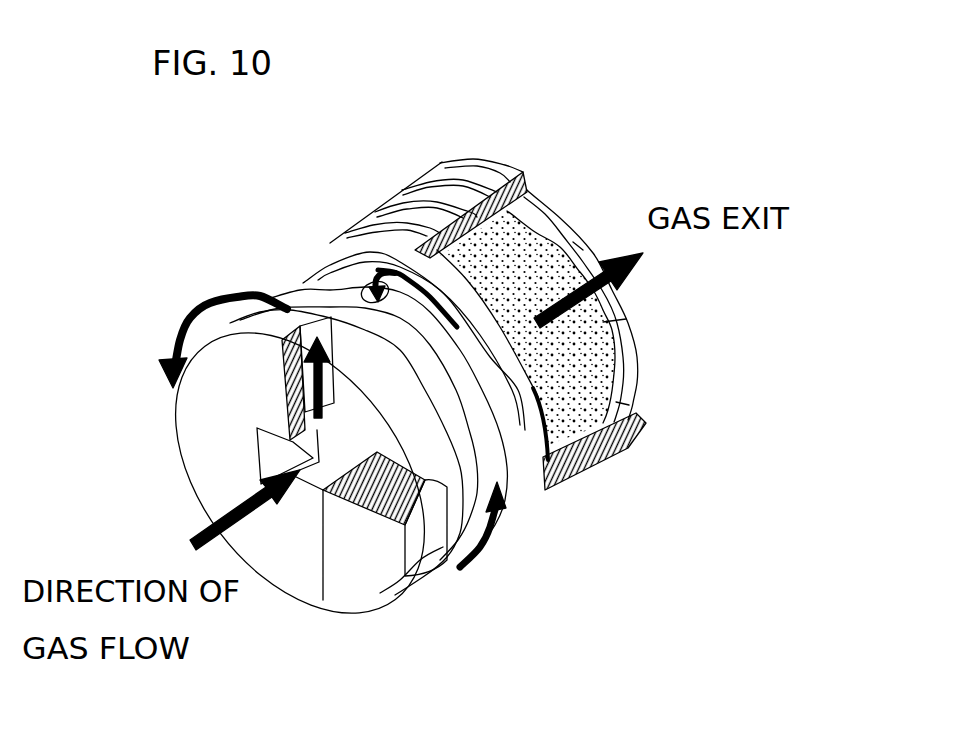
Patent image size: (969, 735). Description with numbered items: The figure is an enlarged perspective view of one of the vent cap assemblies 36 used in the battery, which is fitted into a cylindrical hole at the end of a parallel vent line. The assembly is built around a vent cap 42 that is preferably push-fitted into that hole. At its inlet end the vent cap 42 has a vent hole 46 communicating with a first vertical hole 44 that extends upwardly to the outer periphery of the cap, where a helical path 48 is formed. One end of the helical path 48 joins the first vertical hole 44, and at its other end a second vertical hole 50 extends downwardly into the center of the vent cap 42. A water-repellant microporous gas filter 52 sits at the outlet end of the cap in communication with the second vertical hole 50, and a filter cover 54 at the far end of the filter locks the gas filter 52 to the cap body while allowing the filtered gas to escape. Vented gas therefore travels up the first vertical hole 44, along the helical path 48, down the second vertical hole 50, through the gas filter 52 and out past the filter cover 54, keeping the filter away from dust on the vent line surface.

The vent cap assembly 36 is at (644, 442).
The vent cap 42 is at (464, 450).
The first vertical hole 44 is at (322, 345).
The vent hole 46 is at (310, 498).
The helical path 48 is at (440, 548).
The second vertical hole 50 is at (369, 287).
The gas filter 52 is at (523, 240).
The filter cover 54 is at (641, 349).